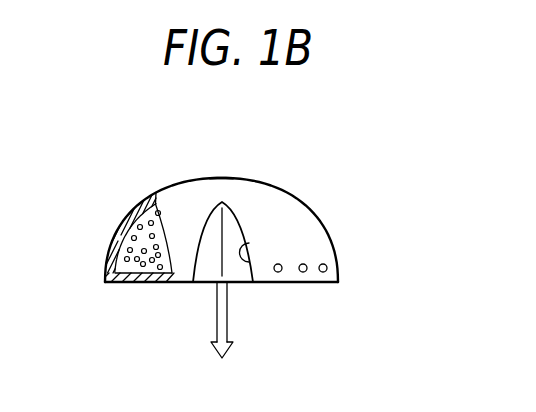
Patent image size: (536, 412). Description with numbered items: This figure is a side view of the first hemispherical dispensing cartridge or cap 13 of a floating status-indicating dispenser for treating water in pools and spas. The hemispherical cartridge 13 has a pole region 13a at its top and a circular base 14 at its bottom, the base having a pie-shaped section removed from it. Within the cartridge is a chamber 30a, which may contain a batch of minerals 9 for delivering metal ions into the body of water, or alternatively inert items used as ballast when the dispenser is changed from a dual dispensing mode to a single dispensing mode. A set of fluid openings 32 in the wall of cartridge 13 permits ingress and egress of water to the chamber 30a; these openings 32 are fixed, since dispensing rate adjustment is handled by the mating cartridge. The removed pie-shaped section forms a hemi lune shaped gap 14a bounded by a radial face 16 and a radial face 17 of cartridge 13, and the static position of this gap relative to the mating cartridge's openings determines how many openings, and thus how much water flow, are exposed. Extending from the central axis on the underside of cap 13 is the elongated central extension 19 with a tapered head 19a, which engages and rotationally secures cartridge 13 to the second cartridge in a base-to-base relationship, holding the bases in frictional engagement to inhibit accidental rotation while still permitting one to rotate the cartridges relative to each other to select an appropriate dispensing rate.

The batch of minerals 9 is at (130, 247).
The hemispherical cartridge 13 is at (287, 192).
The pole region 13a is at (222, 178).
The circular base 14 is at (147, 282).
The hemi lune shaped gap 14a is at (231, 228).
The radial face 16 is at (194, 263).
The radial face 17 is at (240, 243).
The central extension 19 is at (227, 310).
The tapered head 19a is at (213, 348).
The chamber 30a is at (140, 212).
The fluid openings 32 is at (306, 263).